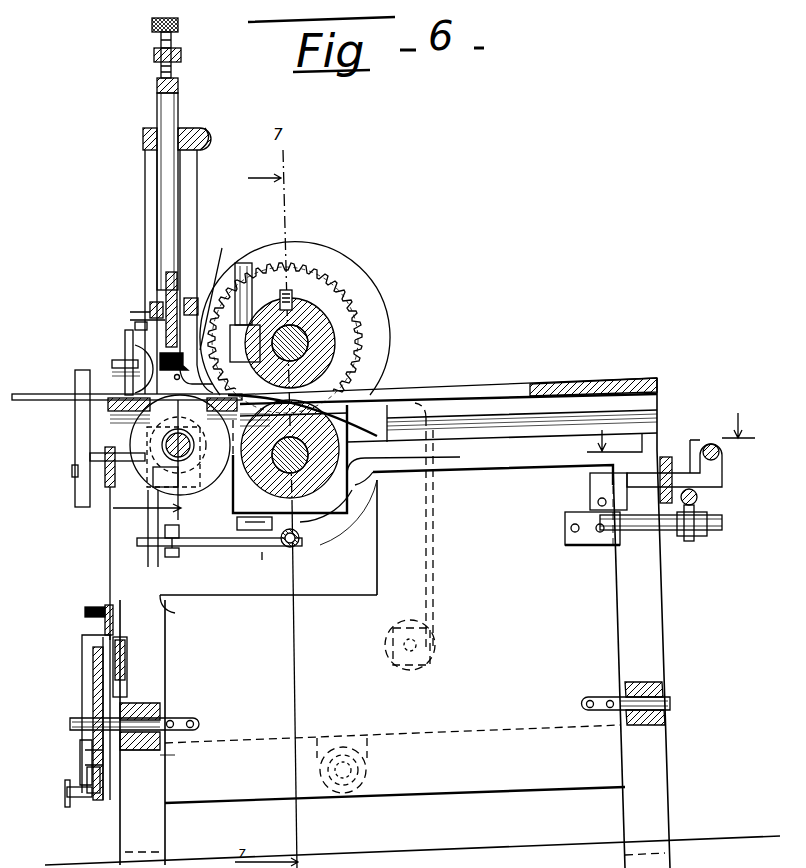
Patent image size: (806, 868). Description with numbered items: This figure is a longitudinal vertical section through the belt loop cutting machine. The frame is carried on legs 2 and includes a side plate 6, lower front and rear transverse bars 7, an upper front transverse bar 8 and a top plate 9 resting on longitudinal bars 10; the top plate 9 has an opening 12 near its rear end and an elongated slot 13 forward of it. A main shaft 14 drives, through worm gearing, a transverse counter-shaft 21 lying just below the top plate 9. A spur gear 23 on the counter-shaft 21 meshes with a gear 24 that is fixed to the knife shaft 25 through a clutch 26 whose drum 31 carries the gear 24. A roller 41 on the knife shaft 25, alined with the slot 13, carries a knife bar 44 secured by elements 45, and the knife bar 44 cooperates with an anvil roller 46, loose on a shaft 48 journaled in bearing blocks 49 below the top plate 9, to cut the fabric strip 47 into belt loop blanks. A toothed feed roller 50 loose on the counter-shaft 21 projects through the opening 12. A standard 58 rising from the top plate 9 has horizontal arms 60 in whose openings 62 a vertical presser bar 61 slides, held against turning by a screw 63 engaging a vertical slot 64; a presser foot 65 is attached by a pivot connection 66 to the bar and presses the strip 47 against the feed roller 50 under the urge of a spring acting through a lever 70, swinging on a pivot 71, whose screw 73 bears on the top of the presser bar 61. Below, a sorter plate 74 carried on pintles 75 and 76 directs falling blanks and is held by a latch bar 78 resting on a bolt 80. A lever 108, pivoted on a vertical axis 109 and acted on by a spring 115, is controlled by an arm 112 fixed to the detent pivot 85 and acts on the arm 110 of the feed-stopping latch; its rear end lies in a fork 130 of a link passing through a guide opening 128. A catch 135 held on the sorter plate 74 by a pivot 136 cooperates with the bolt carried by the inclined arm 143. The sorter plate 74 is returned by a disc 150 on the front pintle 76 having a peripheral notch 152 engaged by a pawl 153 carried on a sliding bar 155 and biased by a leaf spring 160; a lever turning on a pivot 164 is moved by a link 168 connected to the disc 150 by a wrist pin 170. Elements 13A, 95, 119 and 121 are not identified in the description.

The legs 2 is at (668, 781).
The side plate 6 is at (662, 615).
The lower front and rear transverse bars 7 is at (650, 683).
The upper front transverse bar 8 is at (135, 325).
The top plate 9 is at (600, 383).
The longitudinal bars 10 is at (640, 410).
The opening 12 is at (110, 428).
The elongated slot 13 is at (455, 386).
The bracket arm 13A is at (722, 480).
The main shaft 14 is at (683, 431).
The counter-shaft 21 is at (159, 553).
The spur gear 23 is at (133, 440).
The gear 24 is at (335, 318).
The knife shaft 25 is at (308, 350).
The clutch 26 is at (395, 282).
The drum 31 is at (310, 262).
The roller 41 is at (335, 345).
The knife bar 44 is at (361, 269).
The elements 45 is at (252, 266).
The anvil roller 46 is at (307, 548).
The fabric strip 47 is at (40, 393).
The shaft 48 is at (339, 470).
The bearing blocks 49 is at (352, 520).
The feed roller 50 is at (190, 470).
The standard 58 is at (198, 210).
The horizontal arms 60 is at (143, 140).
The vertical presser bar 61 is at (165, 193).
The openings 62 is at (182, 126).
The screw 63 is at (150, 308).
The vertical slot 64 is at (165, 295).
The presser foot 65 is at (125, 345).
The pivot connection 66 is at (222, 248).
The lever 70 is at (152, 57).
The pivot 71 is at (205, 135).
The screw 73 is at (175, 45).
The sorter or director plate 74 is at (522, 792).
The pintle 75 is at (672, 703).
The pintle 76 is at (70, 725).
The latch bar 78 is at (698, 497).
The bolt 80 is at (723, 523).
The pivot 85 is at (418, 672).
The roller 95 is at (368, 772).
The lever 108 is at (230, 548).
The vertical axis 109 is at (262, 560).
The arm 110 is at (152, 523).
The arm 112 is at (436, 566).
The spring 115 is at (300, 548).
The pin 119 is at (78, 480).
The post 121 is at (87, 498).
The guide opening 128 is at (232, 545).
The fork 130 is at (268, 558).
The catch 135 is at (618, 510).
The pivot 136 is at (602, 548).
The inclined arm 143 is at (712, 444).
The disc 150 is at (92, 782).
The peripheral notch 152 is at (93, 660).
The pawl 153 is at (125, 615).
The bar 155 is at (127, 662).
The leaf spring 160 is at (85, 613).
The pivot 164 is at (78, 803).
The link 168 is at (176, 755).
The wrist pin 170 is at (87, 773).